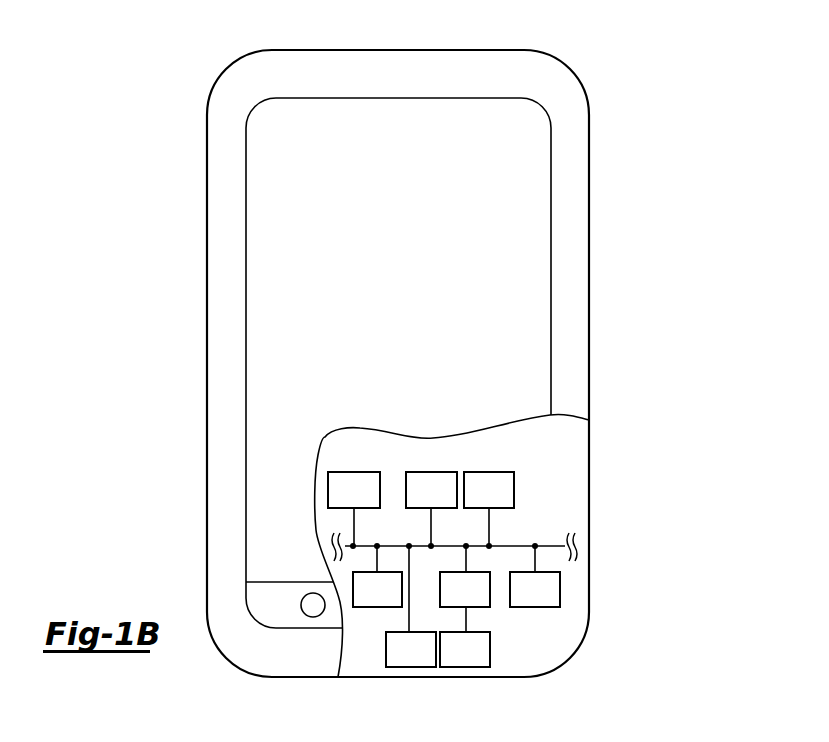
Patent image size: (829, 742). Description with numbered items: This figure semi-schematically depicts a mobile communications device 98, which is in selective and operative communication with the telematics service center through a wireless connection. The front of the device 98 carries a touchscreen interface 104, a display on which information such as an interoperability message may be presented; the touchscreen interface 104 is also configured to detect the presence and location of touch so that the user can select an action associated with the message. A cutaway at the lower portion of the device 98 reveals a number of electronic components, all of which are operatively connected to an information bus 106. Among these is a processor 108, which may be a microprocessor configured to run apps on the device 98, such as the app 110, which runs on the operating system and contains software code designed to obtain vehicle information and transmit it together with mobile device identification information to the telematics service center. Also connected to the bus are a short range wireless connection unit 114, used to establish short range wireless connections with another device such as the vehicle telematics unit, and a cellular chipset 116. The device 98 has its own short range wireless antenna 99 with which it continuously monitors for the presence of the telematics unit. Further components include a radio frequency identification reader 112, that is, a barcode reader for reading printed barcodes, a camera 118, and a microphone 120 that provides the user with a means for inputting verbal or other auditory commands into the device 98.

The mobile communications device 98 is at (642, 167).
The touchscreen interface 104 is at (266, 282).
The information bus 106 is at (553, 546).
The short range wireless antenna 99 is at (403, 662).
The processor 108 is at (457, 602).
The application 110 is at (457, 662).
The radio frequency identification reader 112 is at (481, 502).
The short range wireless connection unit 114 is at (423, 502).
The cellular chipset 116 is at (369, 602).
The camera 118 is at (346, 502).
The microphone 120 is at (527, 602).